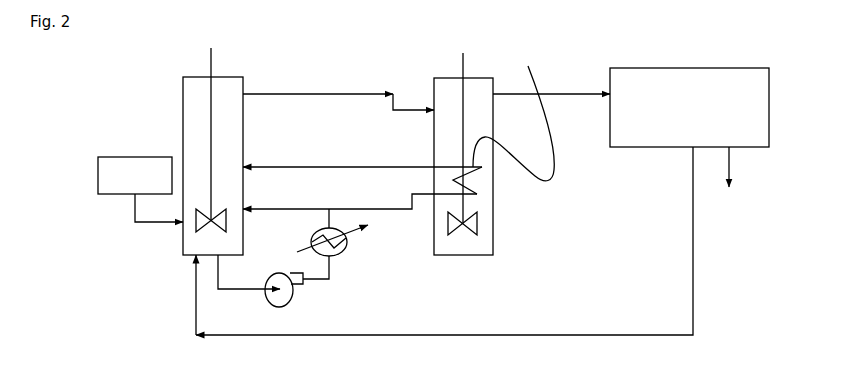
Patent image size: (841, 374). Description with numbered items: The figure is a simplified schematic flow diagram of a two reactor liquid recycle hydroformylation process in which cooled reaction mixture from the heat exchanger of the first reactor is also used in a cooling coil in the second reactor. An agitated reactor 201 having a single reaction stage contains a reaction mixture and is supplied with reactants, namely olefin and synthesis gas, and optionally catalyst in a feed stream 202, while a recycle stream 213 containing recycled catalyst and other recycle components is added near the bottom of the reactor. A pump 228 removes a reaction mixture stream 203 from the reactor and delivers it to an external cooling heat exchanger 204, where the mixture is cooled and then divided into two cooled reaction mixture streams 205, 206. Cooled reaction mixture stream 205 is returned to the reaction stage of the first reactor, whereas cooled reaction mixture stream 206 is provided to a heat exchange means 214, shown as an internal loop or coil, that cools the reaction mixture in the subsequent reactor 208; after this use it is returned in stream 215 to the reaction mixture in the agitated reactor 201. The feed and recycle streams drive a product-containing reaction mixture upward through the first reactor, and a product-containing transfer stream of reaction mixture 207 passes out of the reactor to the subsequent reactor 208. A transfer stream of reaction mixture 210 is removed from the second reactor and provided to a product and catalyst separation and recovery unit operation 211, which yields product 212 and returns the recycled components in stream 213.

The agitated reactor 201 is at (198, 151).
The feed stream 202 is at (140, 202).
The reaction mixture stream 203 is at (249, 282).
The external cooling heat exchanger 204 is at (333, 244).
The cooled reaction mixture stream 205 is at (286, 201).
The cooled reaction mixture stream 206 is at (403, 201).
The transfer stream of reaction mixture 207 is at (338, 90).
The subsequent reactor 208 is at (453, 154).
The transfer stream of reaction mixture 210 is at (551, 87).
The product and catalyst separation and recovery unit operation 211 is at (689, 98).
The product 212 is at (749, 184).
The recycle stream 213 is at (429, 241).
The heat exchange means 214 is at (513, 113).
The stream 215 is at (362, 173).
The pump 228 is at (296, 291).